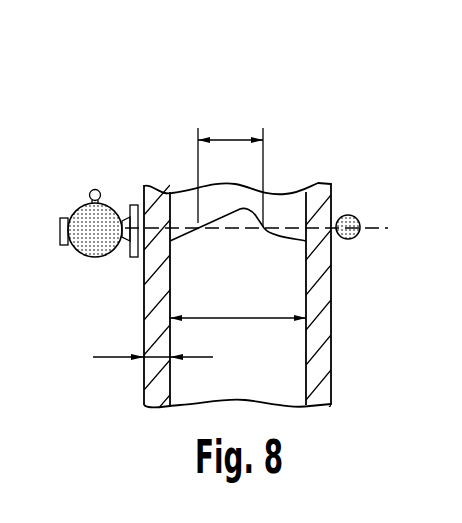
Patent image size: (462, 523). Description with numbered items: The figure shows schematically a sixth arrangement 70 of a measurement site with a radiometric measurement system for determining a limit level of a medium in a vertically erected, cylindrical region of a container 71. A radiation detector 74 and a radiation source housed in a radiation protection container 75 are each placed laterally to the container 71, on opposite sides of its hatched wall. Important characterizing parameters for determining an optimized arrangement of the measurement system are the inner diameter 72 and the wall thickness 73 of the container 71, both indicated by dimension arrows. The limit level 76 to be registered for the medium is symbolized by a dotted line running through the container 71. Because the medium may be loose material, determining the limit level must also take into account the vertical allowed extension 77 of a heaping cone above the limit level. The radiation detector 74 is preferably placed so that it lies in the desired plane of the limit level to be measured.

The sixth arrangement 70 is at (93, 112).
The container 71 is at (331, 360).
The inner diameter 72 is at (251, 320).
The wall thickness 73 is at (107, 359).
The radiation detector 74 is at (356, 239).
The radiation protection container 75 is at (95, 258).
The limit level 76 is at (291, 222).
The vertical allowed extension 77 is at (232, 140).